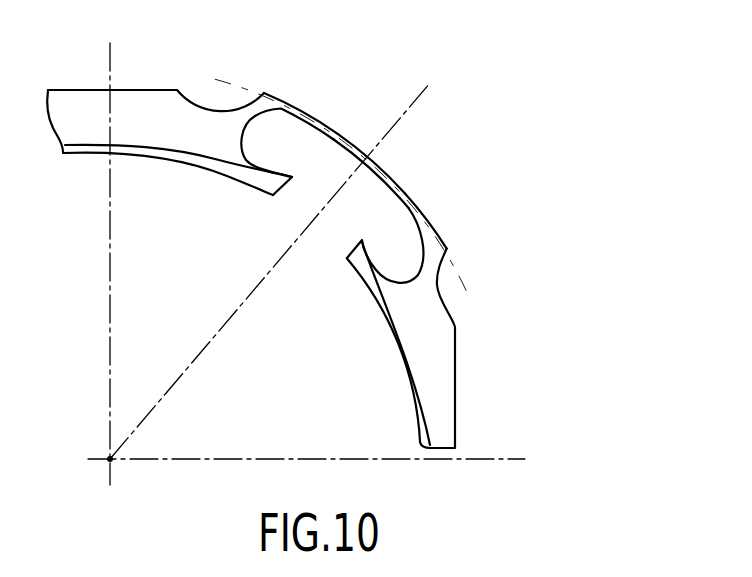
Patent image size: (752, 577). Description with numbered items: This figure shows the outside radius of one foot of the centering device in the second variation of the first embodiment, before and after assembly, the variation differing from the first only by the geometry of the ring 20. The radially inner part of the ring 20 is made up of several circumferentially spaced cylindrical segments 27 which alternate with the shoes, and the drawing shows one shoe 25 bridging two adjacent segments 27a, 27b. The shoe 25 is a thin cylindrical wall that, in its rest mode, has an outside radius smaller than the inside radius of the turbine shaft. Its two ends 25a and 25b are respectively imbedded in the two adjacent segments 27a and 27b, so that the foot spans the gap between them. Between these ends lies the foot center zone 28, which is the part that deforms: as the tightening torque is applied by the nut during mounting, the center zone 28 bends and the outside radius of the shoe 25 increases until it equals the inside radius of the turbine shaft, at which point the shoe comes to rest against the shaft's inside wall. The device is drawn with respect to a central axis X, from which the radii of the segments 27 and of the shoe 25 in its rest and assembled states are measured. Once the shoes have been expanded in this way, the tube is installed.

The ring 20 is at (316, 227).
The shoe 25 is at (374, 163).
The first end of foot 25a is at (272, 100).
The second end of foot 25b is at (448, 245).
The cylindrical segment 27 is at (251, 232).
The cylindrical segment 27a is at (192, 133).
The cylindrical segment 27b is at (413, 340).
The foot center zone 28 is at (365, 153).
The axis X is at (110, 457).